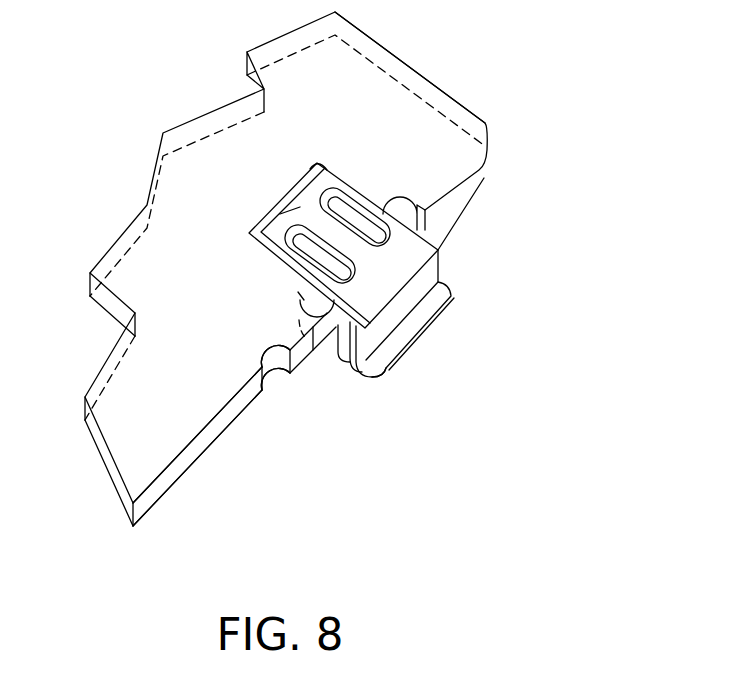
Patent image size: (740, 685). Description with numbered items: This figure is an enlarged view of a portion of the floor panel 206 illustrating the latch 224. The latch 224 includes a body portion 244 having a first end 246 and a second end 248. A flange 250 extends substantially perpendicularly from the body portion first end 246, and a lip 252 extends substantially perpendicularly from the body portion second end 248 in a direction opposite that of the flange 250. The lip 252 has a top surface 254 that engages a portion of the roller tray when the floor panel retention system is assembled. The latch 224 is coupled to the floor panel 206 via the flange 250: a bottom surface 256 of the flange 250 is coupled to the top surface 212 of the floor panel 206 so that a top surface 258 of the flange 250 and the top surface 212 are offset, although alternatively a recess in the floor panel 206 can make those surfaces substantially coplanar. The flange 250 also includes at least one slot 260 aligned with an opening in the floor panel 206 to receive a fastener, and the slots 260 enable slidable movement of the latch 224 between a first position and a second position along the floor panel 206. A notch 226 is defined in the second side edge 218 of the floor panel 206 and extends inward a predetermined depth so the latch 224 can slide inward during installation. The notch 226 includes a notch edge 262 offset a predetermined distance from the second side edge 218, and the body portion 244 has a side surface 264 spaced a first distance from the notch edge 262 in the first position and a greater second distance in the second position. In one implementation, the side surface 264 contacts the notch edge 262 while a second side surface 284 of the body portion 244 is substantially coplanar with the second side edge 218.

The floor panel 206 is at (339, 108).
The top surface 212 is at (387, 62).
The second side edge 218 is at (180, 464).
The latch 224 is at (349, 323).
The notch 226 is at (316, 363).
The body portion 244 is at (428, 267).
The first end 246 is at (372, 352).
The second end 248 is at (356, 375).
The flange 250 is at (458, 232).
The lip 252 is at (435, 305).
The top surface 254 is at (414, 333).
The bottom surface 256 is at (300, 310).
The top surface 258 is at (300, 207).
The slot 260 is at (356, 222).
The notch edge 262 is at (298, 292).
The side surface 264 is at (350, 365).
The second side surface 284 is at (405, 291).